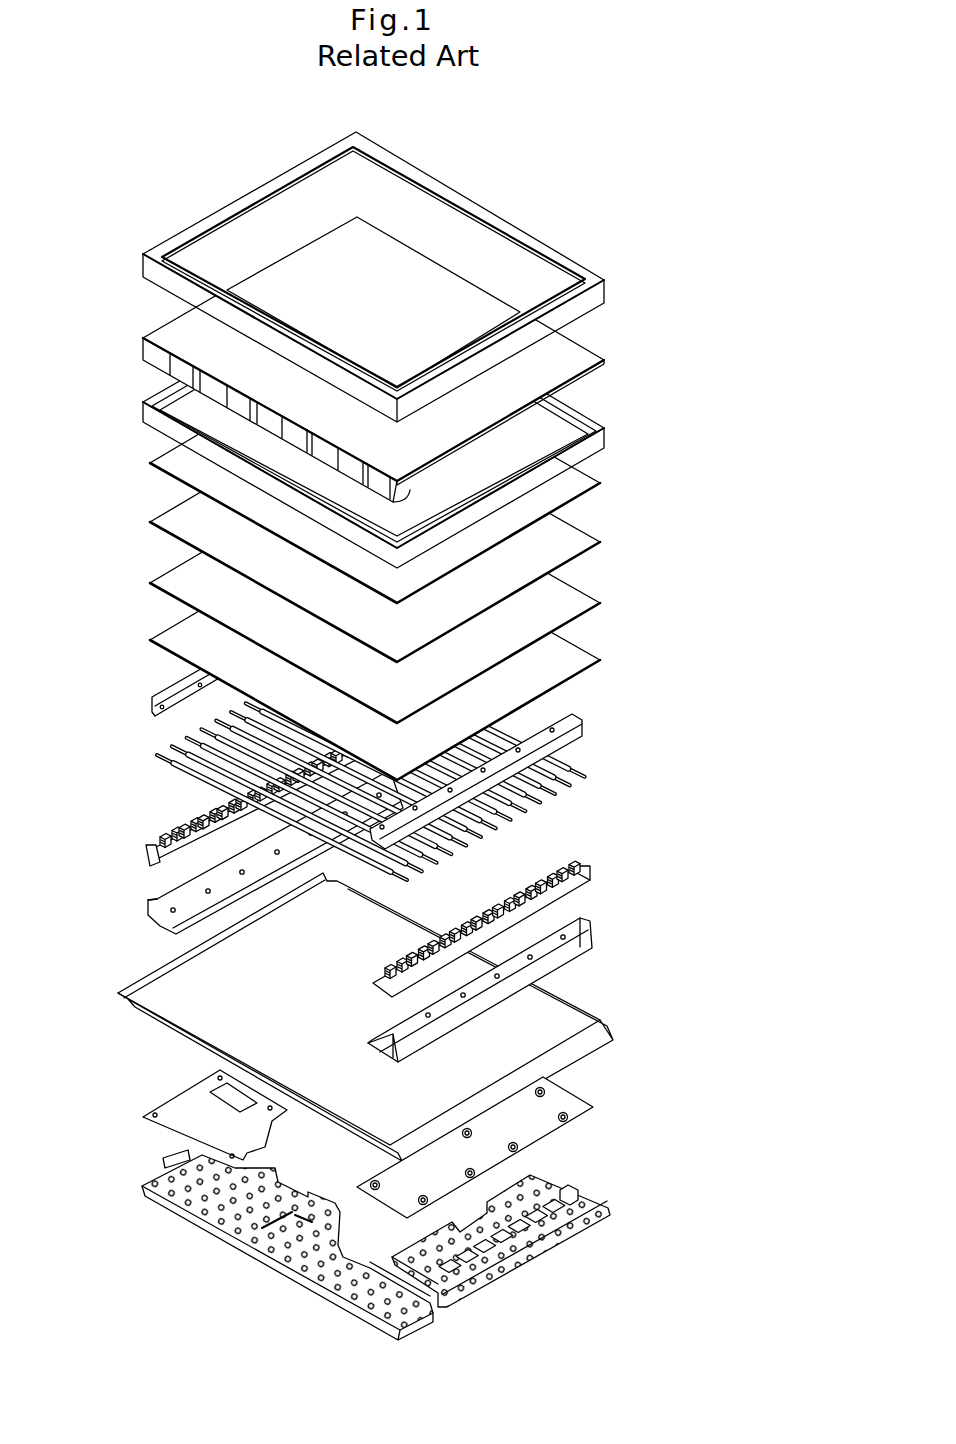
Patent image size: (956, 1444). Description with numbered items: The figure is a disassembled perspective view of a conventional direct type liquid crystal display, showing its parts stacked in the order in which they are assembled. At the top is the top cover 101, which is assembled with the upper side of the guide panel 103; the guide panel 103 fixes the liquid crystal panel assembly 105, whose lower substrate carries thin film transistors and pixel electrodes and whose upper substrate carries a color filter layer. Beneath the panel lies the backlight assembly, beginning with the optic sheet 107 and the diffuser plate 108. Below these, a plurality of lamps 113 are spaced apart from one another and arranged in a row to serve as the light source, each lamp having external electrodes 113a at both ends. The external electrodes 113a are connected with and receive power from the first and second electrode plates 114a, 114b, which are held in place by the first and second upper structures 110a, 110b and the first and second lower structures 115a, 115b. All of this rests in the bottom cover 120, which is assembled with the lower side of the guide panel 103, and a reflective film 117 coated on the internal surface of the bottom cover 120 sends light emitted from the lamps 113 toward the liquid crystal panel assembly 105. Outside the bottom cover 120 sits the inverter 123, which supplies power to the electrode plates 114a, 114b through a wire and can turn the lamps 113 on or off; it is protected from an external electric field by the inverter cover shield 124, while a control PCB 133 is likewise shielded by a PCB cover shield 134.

The top cover 101 is at (566, 243).
The guide panel 103 is at (605, 428).
The liquid crystal panel assembly 105 is at (587, 353).
The optic sheet 107 is at (610, 613).
The diffuser plate 108 is at (600, 660).
The first upper structure 110a is at (574, 736).
The second upper structure 110b is at (157, 697).
The lamps 113 is at (573, 777).
The external electrodes 113a is at (537, 782).
The first electrode plate 114a is at (591, 878).
The second electrode plate 114b is at (168, 850).
The first lower structure 115a is at (592, 932).
The second lower structure 115b is at (148, 903).
The reflective film 117 is at (227, 1010).
The bottom cover 120 is at (586, 1003).
The inverter 123 is at (594, 1110).
The inverter cover shield 124 is at (580, 1202).
The control PCB 133 is at (145, 1118).
The PCB cover shield 134 is at (143, 1185).